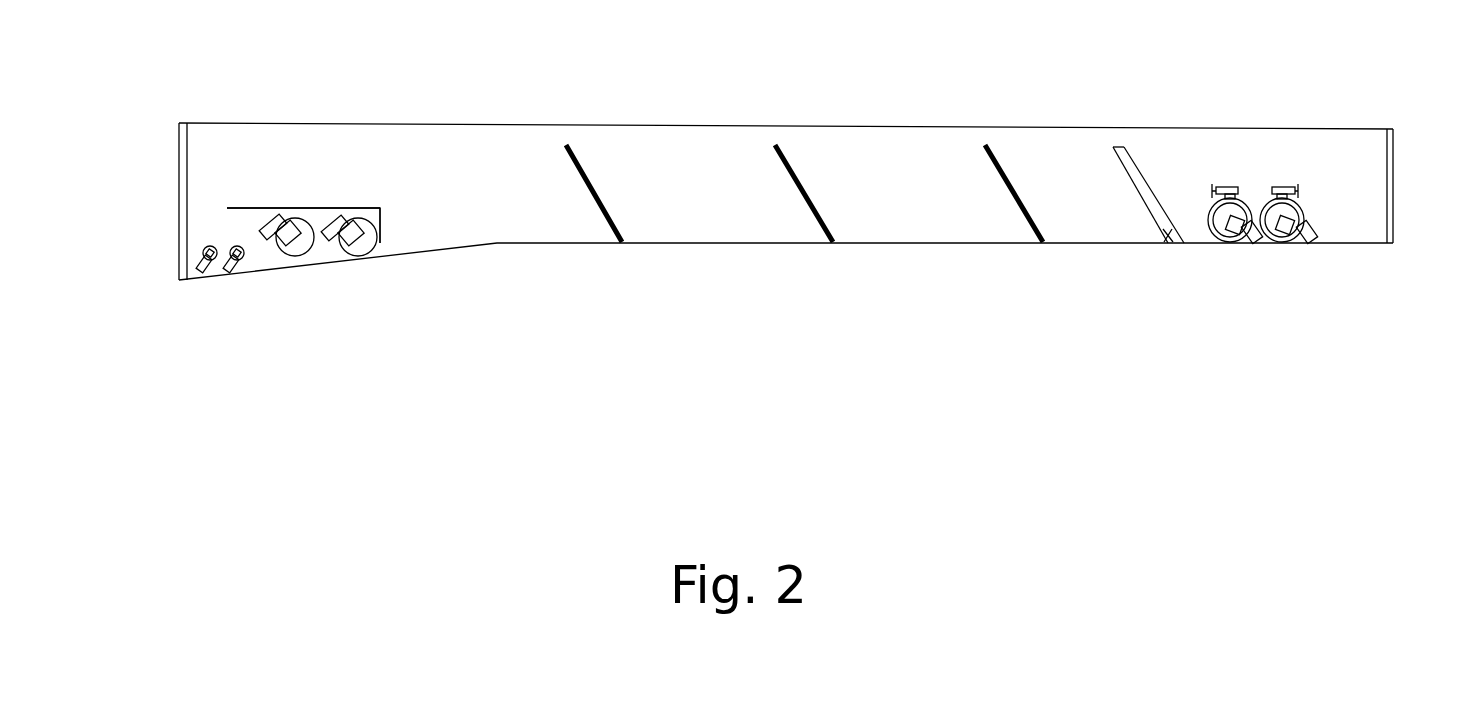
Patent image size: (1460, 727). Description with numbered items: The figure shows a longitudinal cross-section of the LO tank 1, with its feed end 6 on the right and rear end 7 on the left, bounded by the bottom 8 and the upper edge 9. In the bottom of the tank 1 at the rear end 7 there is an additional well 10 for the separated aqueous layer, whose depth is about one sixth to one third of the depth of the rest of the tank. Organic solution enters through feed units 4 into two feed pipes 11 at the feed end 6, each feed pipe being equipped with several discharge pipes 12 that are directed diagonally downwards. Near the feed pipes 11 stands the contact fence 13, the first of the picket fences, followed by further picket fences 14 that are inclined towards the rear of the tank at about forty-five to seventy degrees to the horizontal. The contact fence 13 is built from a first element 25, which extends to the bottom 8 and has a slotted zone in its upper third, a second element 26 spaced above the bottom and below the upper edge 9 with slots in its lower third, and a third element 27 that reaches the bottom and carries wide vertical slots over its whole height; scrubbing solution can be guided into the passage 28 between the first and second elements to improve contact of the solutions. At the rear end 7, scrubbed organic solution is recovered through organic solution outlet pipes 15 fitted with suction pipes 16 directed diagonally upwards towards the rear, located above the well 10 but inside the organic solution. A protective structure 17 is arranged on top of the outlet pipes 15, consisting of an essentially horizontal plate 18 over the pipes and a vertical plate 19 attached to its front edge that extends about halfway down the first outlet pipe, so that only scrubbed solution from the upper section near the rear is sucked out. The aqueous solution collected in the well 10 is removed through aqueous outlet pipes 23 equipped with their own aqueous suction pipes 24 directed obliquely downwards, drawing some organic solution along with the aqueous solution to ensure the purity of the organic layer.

The LO tank 1 is at (781, 156).
The feed unit 4 is at (1230, 190).
The feed end 6 is at (1391, 190).
The rear end 7 is at (179, 146).
The bottom 8 is at (930, 243).
The upper edge 9 is at (928, 126).
The well 10 is at (300, 263).
The feed pipe 11 is at (1228, 230).
The discharge pipe 12 is at (1245, 247).
The contact fence 13 is at (1133, 169).
The picket fence 14 is at (587, 160).
The organic solution outlet pipe 15 is at (308, 247).
The suction pipe 16 is at (282, 226).
The protective structure 17 is at (285, 205).
The horizontal plate 18 is at (297, 208).
The vertical plate 19 is at (380, 237).
The aqueous outlet pipe 23 is at (203, 272).
The aqueous suction pipe 24 is at (207, 267).
The first element 25 is at (1150, 181).
The second element 26 is at (1143, 199).
The third element 27 is at (1113, 148).
The passage 28 is at (1168, 243).